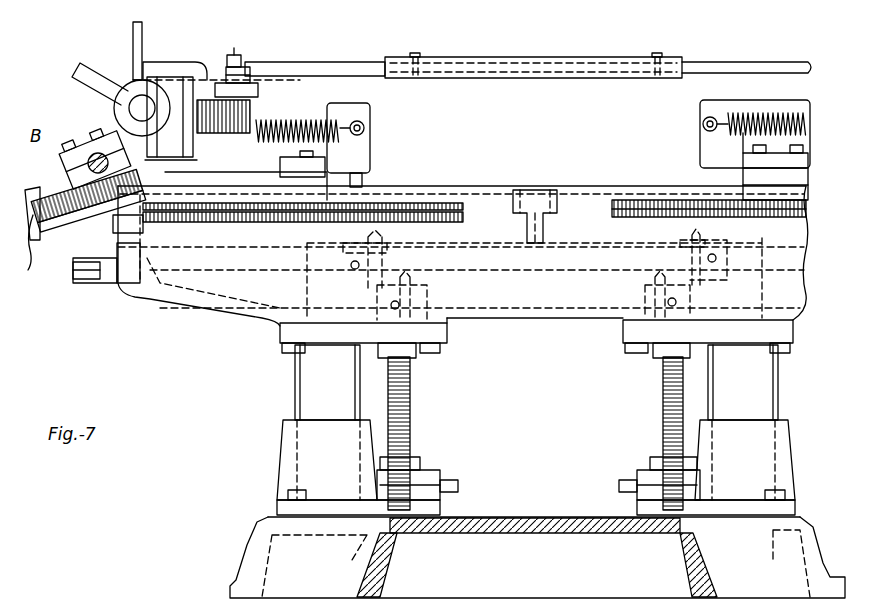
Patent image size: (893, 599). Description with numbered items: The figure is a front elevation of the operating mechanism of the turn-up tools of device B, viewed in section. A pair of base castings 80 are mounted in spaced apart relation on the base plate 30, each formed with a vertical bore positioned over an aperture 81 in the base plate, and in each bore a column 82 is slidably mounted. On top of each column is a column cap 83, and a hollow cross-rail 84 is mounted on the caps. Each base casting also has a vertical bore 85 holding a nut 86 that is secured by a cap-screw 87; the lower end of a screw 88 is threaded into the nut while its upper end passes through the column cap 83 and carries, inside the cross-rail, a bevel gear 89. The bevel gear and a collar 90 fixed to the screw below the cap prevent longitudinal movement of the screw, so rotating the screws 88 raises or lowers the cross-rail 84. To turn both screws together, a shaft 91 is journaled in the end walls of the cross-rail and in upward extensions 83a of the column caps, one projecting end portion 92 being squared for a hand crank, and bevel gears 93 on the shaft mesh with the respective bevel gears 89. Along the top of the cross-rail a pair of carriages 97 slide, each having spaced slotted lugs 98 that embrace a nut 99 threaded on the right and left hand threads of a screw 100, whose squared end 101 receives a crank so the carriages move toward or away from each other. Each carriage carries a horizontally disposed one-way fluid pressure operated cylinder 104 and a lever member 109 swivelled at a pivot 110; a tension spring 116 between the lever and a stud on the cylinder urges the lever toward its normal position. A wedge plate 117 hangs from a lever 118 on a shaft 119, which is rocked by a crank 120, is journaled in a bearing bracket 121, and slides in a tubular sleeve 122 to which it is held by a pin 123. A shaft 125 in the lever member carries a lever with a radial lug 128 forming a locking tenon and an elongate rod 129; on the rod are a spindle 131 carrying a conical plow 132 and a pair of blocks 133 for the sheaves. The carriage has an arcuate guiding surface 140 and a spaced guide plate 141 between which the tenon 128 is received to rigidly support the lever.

The base plate 30 is at (270, 548).
The base casting 80 is at (285, 460).
The aperture 81 is at (365, 530).
The column 82 is at (305, 390).
The column cap 83 is at (285, 326).
The upward extension 83a is at (817, 283).
The cross-rail 84 is at (530, 318).
The vertical bore 85 is at (412, 535).
The nut 86 is at (420, 462).
The cap-screw 87 is at (455, 485).
The screw 88 is at (407, 418).
The bevel gear 89 is at (430, 288).
The collar 90 is at (412, 354).
The shaft 91 is at (540, 272).
The projecting end portion 92 is at (88, 282).
The bevel gear 93 is at (388, 243).
The carriage 97 is at (360, 181).
The slotted lug 98 is at (205, 228).
The nut 99 is at (238, 228).
The screw 100 is at (545, 226).
The squared end 101 is at (70, 236).
The fluid pressure operated cylinder 104 is at (362, 158).
The lever member 109 is at (186, 84).
The pivot 110 is at (172, 77).
The tension spring 116 is at (312, 124).
The wedge plate 117 is at (250, 62).
The lever 118 is at (234, 56).
The shaft 119 is at (340, 68).
The crank 120 is at (134, 32).
The bearing bracket 121 is at (250, 78).
The tubular sleeve 122 is at (532, 62).
The pin 123 is at (415, 58).
The shaft 125 is at (141, 108).
The lug 128 is at (82, 72).
The rod 129 is at (72, 170).
The spindle 131 is at (132, 233).
The plow 132 is at (33, 266).
The block 133 is at (78, 140).
The guiding surface 140 is at (245, 108).
The guide plate 141 is at (272, 82).